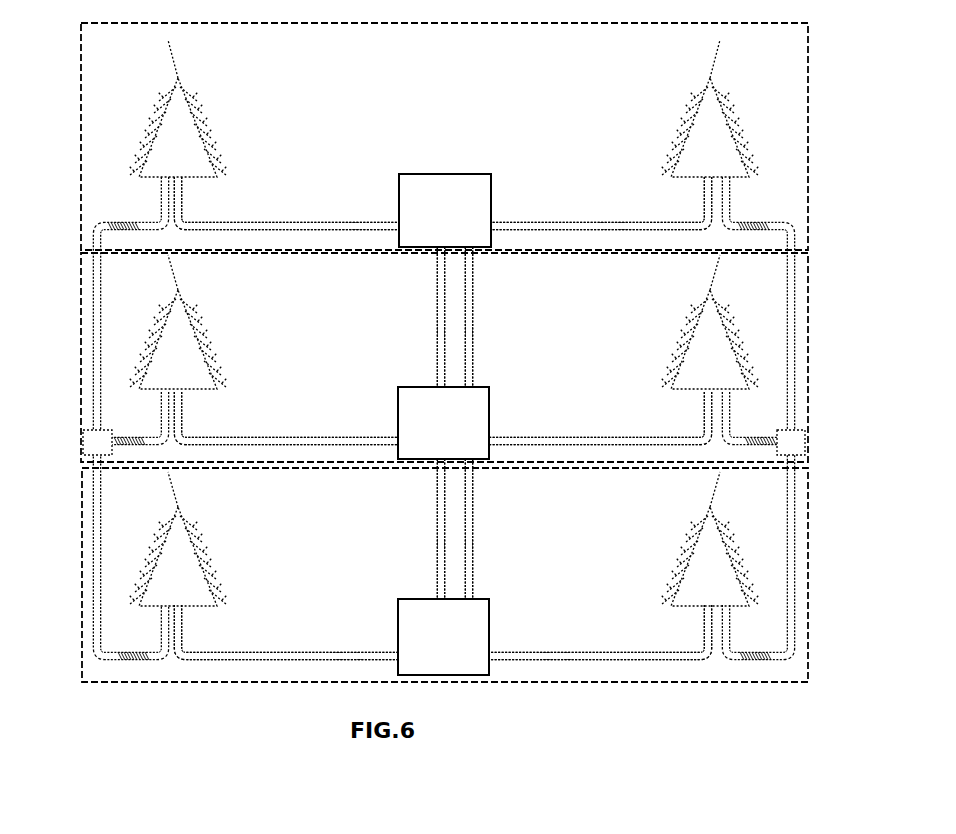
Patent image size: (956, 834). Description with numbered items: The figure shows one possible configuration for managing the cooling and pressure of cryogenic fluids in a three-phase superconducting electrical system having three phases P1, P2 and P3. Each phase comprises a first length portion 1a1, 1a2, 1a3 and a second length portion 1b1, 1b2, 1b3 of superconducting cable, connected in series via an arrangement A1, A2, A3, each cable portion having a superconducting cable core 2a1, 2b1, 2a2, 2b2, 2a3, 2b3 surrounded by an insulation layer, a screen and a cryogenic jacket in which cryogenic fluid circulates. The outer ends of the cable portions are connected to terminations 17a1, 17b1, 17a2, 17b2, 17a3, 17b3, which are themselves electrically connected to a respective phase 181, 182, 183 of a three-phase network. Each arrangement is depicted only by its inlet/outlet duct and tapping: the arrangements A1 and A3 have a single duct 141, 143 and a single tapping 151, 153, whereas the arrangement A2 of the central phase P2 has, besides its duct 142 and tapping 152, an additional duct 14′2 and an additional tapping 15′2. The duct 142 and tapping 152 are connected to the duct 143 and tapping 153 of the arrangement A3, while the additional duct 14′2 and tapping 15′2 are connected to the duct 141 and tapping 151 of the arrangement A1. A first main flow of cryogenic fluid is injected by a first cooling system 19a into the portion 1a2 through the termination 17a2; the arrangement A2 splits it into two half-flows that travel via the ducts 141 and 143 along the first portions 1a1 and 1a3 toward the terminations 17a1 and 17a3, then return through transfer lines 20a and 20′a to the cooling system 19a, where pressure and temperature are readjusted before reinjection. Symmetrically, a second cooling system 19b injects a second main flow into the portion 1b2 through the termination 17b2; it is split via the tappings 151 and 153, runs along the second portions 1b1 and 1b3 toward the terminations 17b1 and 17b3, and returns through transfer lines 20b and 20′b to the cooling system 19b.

The first phase P1 is at (80, 137).
The central phase P2 is at (80, 297).
The third phase P3 is at (80, 640).
The arrangement A1 is at (403, 192).
The arrangement A2 is at (403, 408).
The arrangement A3 is at (403, 630).
The phase of three-phase electrical network 181 is at (178, 58).
The phase of three-phase electrical network 182 is at (181, 275).
The phase of three-phase electrical network 183 is at (182, 490).
The termination 17a1 is at (162, 145).
The termination 17b1 is at (727, 148).
The termination 17a2 is at (160, 350).
The termination 17b2 is at (723, 365).
The termination 17a3 is at (165, 572).
The termination 17b3 is at (727, 580).
The first length portion of superconducting cable 1a1 is at (259, 219).
The second length portion of superconducting cable 1b1 is at (632, 220).
The first length portion of superconducting cable 1a2 is at (254, 434).
The second length portion of superconducting cable 1b2 is at (634, 435).
The first length portion of superconducting cable 1a3 is at (258, 650).
The second length portion of superconducting cable 1b3 is at (634, 650).
The superconducting cable core 2a1 is at (235, 222).
The superconducting cable core 2b1 is at (659, 222).
The superconducting cable core 2a2 is at (234, 437).
The superconducting cable core 2b2 is at (655, 437).
The superconducting cable core 2a3 is at (232, 653).
The superconducting cable core 2b3 is at (655, 653).
The inlet/outlet duct 141 is at (437, 253).
The inlet/outlet tapping 151 is at (473, 253).
The additional inlet/outlet duct 14′2 is at (437, 382).
The additional inlet/outlet tapping 15′2 is at (473, 382).
The inlet/outlet duct 142 is at (437, 462).
The inlet/outlet tapping 152 is at (473, 462).
The inlet/outlet duct 143 is at (437, 597).
The inlet/outlet tapping 153 is at (473, 597).
The first cooling system 19a is at (83, 441).
The second cooling system 19b is at (805, 441).
The transfer line 20a is at (95, 336).
The transfer line 20b is at (797, 335).
The transfer line 20′a is at (95, 548).
The transfer line 20′b is at (797, 549).